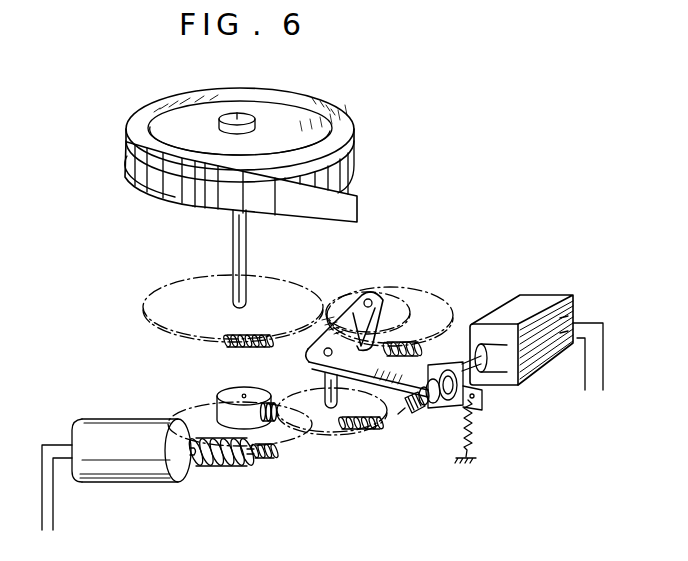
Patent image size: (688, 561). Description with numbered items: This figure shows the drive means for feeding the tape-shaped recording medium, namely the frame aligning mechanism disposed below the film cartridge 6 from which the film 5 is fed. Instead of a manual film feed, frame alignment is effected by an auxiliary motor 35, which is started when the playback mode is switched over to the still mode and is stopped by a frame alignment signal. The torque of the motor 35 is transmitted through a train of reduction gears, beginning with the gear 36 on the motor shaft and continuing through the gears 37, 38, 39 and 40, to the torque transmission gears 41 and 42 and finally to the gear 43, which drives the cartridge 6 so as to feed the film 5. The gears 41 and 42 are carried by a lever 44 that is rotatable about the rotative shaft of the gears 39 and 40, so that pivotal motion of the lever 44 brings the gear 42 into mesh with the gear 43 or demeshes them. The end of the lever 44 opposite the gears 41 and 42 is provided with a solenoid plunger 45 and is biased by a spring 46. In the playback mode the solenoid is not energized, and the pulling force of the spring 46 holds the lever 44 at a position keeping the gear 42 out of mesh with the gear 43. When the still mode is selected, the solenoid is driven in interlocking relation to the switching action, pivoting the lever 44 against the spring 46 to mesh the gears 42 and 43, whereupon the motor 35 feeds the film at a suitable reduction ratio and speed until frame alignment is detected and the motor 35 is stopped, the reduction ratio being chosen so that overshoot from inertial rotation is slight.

The film 5 is at (356, 203).
The film cartridge 6 is at (337, 117).
The auxiliary motor 35 is at (137, 486).
The reduction gear 36 is at (223, 468).
The reduction gear 37 is at (264, 459).
The reduction gear 38 is at (229, 394).
The reduction gear 39 is at (329, 432).
The reduction gear 40 is at (312, 352).
The torque transmission gear 41 is at (445, 311).
The torque transmission gear 42 is at (400, 305).
The reduction gear 43 is at (293, 290).
The lever 44 is at (365, 290).
The solenoid plunger 45 is at (513, 378).
The spring 46 is at (473, 434).